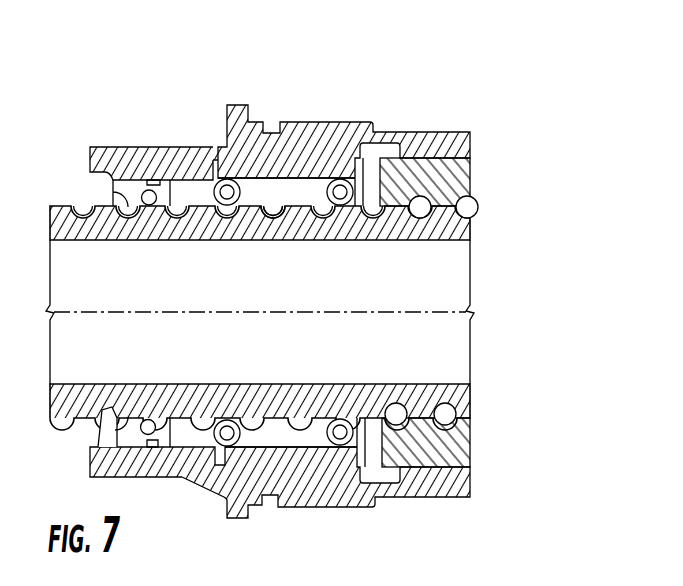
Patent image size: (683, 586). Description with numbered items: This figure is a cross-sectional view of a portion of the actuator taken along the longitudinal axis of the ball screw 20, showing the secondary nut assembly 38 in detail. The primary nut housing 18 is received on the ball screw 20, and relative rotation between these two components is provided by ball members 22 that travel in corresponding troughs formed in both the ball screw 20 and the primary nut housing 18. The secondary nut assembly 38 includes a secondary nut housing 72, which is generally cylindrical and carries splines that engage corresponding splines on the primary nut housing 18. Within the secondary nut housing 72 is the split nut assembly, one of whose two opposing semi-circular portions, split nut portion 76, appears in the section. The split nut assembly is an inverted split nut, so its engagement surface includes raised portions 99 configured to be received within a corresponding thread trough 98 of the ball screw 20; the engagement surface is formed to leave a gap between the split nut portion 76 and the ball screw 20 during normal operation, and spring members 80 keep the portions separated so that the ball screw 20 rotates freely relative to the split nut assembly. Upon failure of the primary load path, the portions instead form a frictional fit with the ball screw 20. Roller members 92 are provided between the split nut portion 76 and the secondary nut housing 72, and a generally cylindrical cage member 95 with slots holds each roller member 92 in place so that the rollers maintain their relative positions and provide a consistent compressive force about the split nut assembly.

The secondary nut assembly 38 is at (262, 66).
The cage member 95 is at (243, 121).
The roller members 92 is at (240, 180).
The split nut portion 76 is at (310, 188).
The secondary nut housing 72 is at (358, 132).
The primary nut housing 18 is at (457, 173).
The ball screw 20 is at (470, 228).
The raised portions 99 is at (268, 196).
The thread trough 98 is at (262, 206).
The spring members 80 is at (342, 418).
The ball members 22 is at (445, 413).